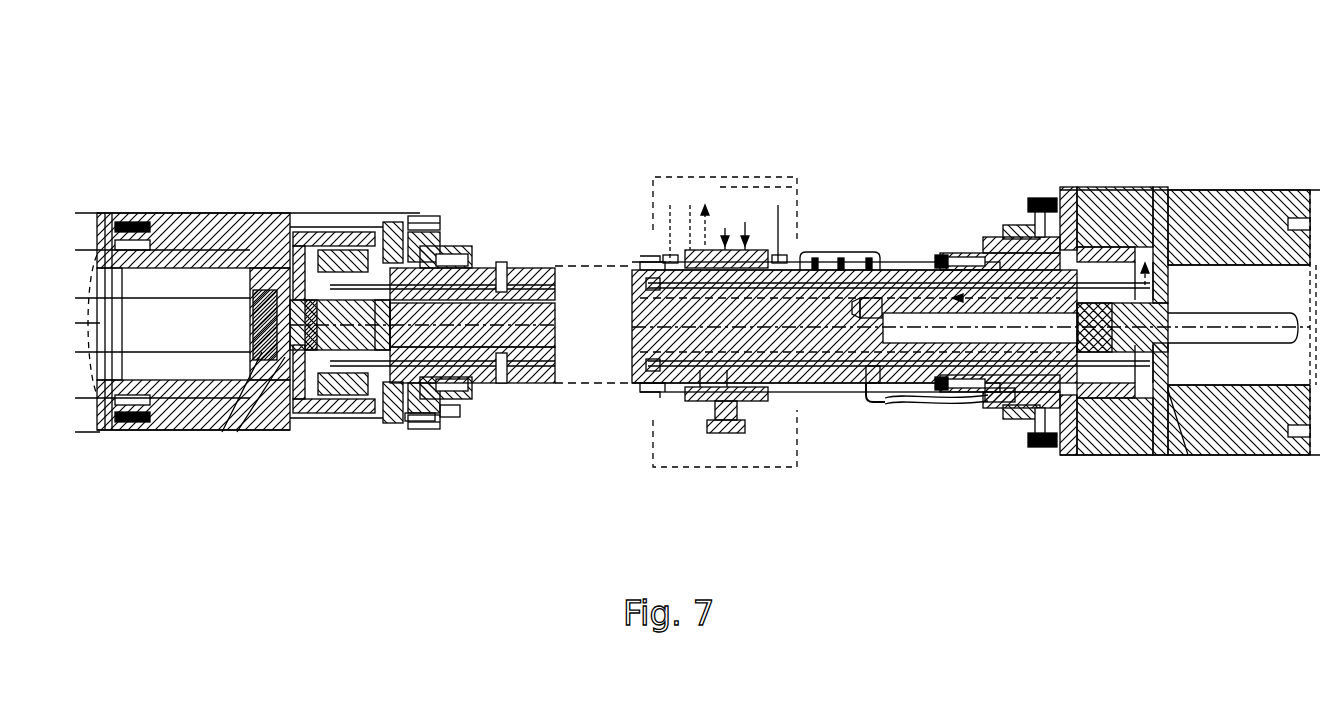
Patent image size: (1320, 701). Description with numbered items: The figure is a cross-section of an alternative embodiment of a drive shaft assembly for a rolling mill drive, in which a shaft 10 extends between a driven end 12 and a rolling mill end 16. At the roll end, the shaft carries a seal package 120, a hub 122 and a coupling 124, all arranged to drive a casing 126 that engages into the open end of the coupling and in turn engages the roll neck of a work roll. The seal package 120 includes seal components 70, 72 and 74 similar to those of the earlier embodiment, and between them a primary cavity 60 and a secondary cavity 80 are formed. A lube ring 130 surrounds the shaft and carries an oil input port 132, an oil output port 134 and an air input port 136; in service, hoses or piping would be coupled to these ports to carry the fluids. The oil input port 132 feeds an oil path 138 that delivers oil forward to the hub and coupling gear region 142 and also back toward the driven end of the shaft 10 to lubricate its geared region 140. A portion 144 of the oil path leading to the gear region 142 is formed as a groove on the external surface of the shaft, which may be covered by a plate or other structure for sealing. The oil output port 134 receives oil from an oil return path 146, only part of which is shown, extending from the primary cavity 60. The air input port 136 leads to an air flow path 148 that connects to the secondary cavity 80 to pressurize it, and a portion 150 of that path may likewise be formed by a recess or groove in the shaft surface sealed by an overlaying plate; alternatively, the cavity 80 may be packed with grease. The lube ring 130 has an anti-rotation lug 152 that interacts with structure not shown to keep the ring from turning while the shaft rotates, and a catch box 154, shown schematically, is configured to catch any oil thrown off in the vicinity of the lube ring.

The shaft 10 is at (797, 335).
The driven end 12 is at (1127, 243).
The rolling mill end 16 is at (316, 276).
The primary cavity 60 is at (373, 402).
The seal component 70 is at (380, 400).
The seal component 72 is at (450, 408).
The seal component 74 is at (421, 420).
The secondary cavity 80 is at (425, 262).
The seal package 120 is at (437, 212).
The hub 122 is at (375, 215).
The coupling 124 is at (348, 215).
The casing 126 is at (176, 215).
The lube ring 130 is at (690, 402).
The oil input port 132 is at (752, 240).
The oil output port 134 is at (697, 232).
The air input port 136 is at (740, 240).
The oil path 138 is at (800, 265).
The geared region 140 is at (1120, 243).
The coupling gear region 142 is at (303, 215).
The portion of the oil path 144 is at (640, 262).
The oil return path 146 is at (430, 242).
The air flow path 148 is at (692, 388).
The portion of the air flow path 150 is at (530, 392).
The anti-rotation lug 152 is at (653, 440).
The catch box 154 is at (777, 478).